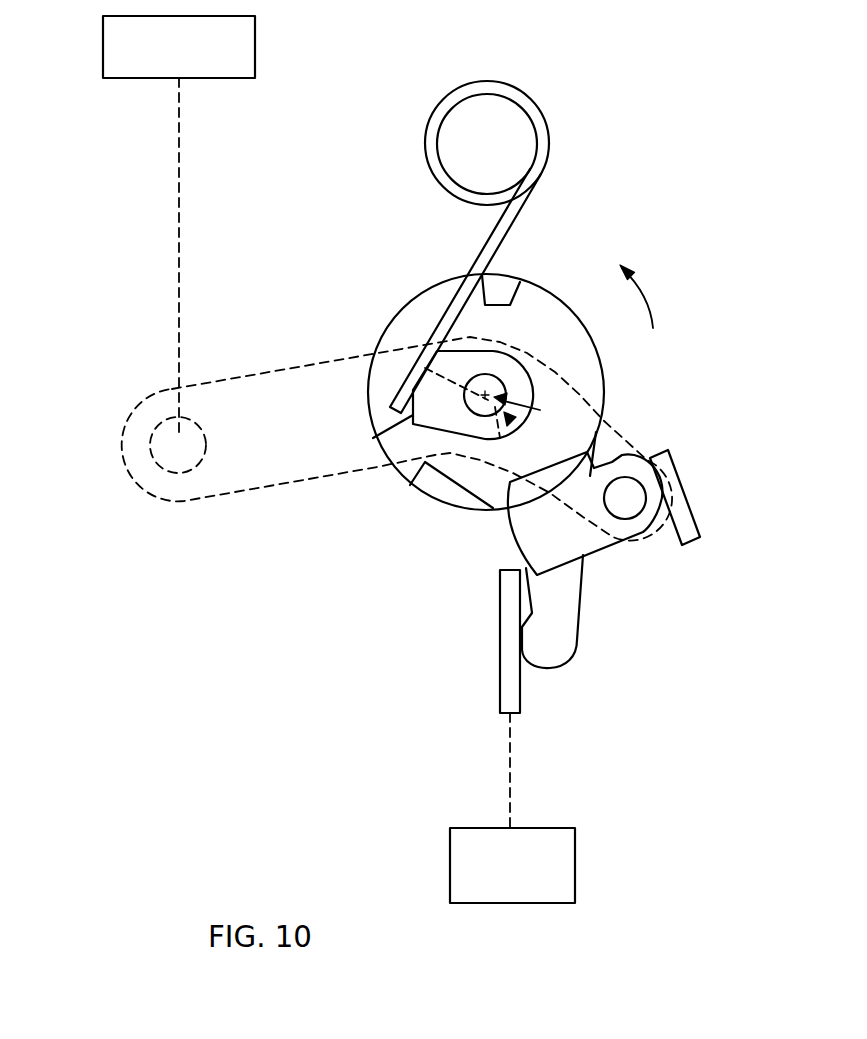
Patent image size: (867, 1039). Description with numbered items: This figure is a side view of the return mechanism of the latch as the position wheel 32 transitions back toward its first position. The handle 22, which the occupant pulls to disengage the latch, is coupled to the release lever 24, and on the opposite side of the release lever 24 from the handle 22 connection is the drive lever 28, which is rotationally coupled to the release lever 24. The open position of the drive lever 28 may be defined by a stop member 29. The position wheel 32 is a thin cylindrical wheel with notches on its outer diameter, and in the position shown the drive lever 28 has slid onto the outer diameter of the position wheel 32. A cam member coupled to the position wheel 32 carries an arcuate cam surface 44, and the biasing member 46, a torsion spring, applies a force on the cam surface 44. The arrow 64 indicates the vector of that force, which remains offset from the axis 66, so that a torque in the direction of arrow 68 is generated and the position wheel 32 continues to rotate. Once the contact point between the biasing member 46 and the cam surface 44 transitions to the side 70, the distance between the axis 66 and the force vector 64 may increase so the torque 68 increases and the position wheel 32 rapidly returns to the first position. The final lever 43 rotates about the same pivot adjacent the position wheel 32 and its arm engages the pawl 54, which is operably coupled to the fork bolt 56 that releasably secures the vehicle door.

The handle 22 is at (103, 55).
The release lever 24 is at (287, 486).
The drive lever 28 is at (605, 549).
The stop member 29 is at (695, 508).
The position wheel 32 is at (412, 298).
The final lever 43 is at (580, 622).
The cam surface 44 is at (471, 350).
The biasing member 46 is at (443, 108).
The pawl 54 is at (497, 637).
The fork bolt 56 is at (452, 882).
The arrow (force vector) 64 is at (515, 435).
The axis 66 is at (534, 409).
The arrow (torque) 68 is at (636, 284).
The side 70 is at (374, 439).